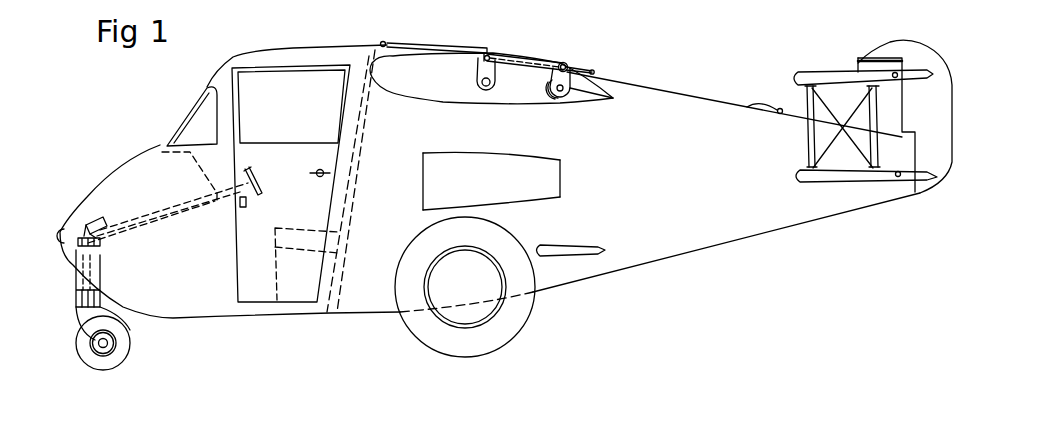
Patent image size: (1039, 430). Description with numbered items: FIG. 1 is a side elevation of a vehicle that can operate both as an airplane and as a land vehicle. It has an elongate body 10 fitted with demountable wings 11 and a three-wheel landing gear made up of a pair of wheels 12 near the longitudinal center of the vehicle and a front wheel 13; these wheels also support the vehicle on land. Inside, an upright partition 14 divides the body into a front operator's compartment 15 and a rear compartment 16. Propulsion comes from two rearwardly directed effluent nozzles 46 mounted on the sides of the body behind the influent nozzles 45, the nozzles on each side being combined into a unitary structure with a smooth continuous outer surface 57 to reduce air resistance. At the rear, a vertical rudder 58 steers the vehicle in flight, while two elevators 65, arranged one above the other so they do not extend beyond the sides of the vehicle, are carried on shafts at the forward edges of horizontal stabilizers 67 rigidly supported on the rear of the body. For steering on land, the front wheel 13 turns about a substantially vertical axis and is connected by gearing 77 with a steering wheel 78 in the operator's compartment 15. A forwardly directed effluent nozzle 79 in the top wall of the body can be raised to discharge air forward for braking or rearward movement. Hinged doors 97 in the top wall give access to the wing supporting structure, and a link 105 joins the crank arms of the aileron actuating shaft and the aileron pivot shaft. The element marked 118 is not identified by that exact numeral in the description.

The body 10 is at (680, 242).
The wings 11 is at (500, 78).
The wheels 12 is at (525, 303).
The front wheel 13 is at (117, 350).
The upright partition 14 is at (376, 49).
The operator's compartment 15 is at (260, 288).
The rear compartment 16 is at (378, 268).
The influent nozzles 45 is at (423, 187).
The effluent nozzles 46 is at (562, 183).
The smooth continuous outer surface 57 is at (530, 173).
The vertical rudder 58 is at (940, 124).
The elevators 65 is at (929, 73).
The horizontal stabilizers 67 is at (818, 77).
The gearing 77 is at (104, 240).
The steering wheel 78 is at (259, 176).
The forwardly directed effluent nozzle 79 is at (762, 102).
The doors 97 is at (442, 45).
The link 105 is at (533, 62).
The slot 118 is at (597, 248).